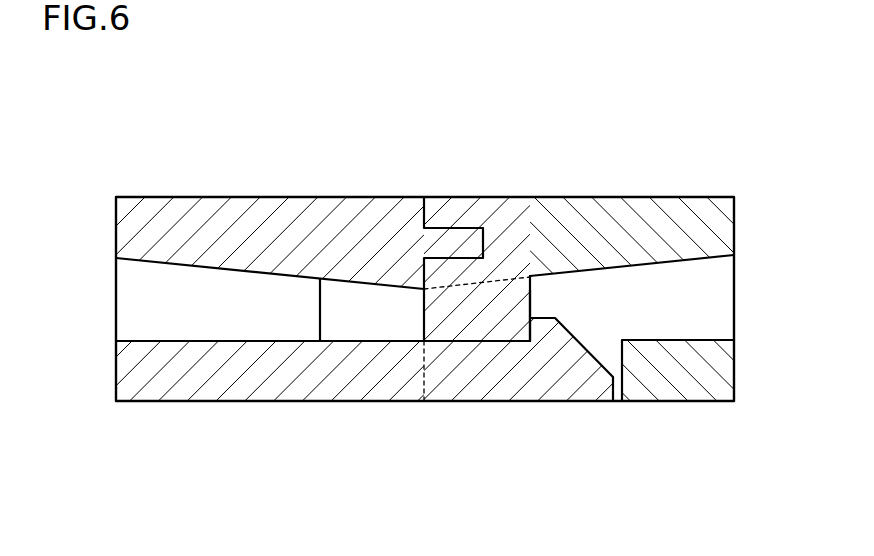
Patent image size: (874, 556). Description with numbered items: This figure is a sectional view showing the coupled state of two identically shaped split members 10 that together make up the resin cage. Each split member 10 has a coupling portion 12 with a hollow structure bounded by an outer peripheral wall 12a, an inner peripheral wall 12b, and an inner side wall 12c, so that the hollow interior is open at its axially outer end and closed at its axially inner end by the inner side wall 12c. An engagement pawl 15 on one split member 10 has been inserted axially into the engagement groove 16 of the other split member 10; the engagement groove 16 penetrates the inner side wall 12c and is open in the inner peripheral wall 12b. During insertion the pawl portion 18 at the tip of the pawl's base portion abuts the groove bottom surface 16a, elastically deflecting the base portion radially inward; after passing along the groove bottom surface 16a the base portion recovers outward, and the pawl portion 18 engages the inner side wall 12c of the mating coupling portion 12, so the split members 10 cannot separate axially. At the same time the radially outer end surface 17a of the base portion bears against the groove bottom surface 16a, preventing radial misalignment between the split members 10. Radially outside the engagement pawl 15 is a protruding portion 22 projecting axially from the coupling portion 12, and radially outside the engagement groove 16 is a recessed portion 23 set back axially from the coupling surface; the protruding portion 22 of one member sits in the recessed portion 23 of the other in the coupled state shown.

The split member 10 is at (117, 143).
The coupling portion 12 is at (167, 186).
The outer peripheral wall 12a is at (230, 213).
The inner peripheral wall 12b is at (246, 392).
The inner side wall 12c is at (365, 325).
The engagement pawl 15 is at (567, 402).
The engagement groove 16 is at (461, 342).
The groove bottom surface 16a is at (500, 285).
The radially outer end surface 17a is at (500, 285).
The pawl portion 18 is at (549, 317).
The protruding portion 22 is at (445, 223).
The recessed portion 23 is at (473, 228).